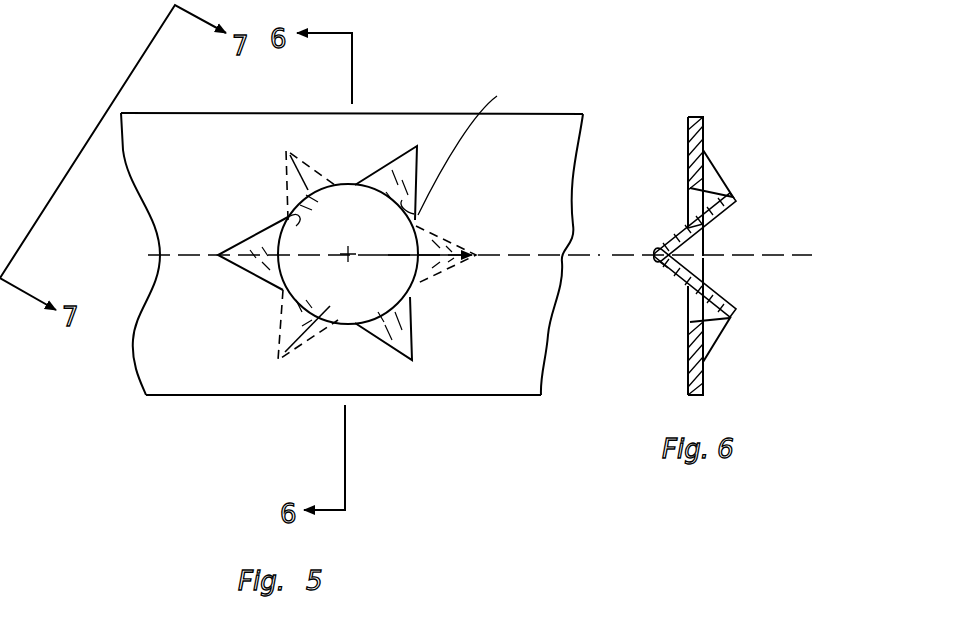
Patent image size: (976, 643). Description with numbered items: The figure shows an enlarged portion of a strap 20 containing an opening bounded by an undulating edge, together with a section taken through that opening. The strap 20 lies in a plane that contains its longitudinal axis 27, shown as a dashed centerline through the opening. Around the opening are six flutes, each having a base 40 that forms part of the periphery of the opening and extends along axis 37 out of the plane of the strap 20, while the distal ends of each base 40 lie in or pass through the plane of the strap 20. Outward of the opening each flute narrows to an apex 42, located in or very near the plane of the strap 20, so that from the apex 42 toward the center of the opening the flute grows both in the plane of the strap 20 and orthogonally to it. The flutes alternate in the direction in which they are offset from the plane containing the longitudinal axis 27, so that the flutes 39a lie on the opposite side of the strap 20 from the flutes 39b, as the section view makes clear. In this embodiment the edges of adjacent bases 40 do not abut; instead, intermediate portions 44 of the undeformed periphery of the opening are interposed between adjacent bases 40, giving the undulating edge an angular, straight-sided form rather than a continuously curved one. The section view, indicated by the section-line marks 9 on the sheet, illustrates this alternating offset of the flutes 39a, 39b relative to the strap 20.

In FIG. 5, the bend line / rotation direction 9 is at (327, 302).
In FIG. 6, the strap 20 is at (704, 126).
In FIG. 5, the longitudinal axis 27 is at (152, 255).
In FIG. 6, the axis 37 is at (740, 255).
In FIG. 6, the flutes 39a is at (661, 252).
In FIG. 6, the flutes 39b is at (735, 196).
In FIG. 5, the base 40 is at (290, 217).
In FIG. 6, the base 40 is at (670, 272).
In FIG. 5, the apex 42 is at (287, 152).
In FIG. 5, the intermediate portions 44 is at (352, 186).
In FIG. 6, the intermediate portions 44 is at (688, 224).